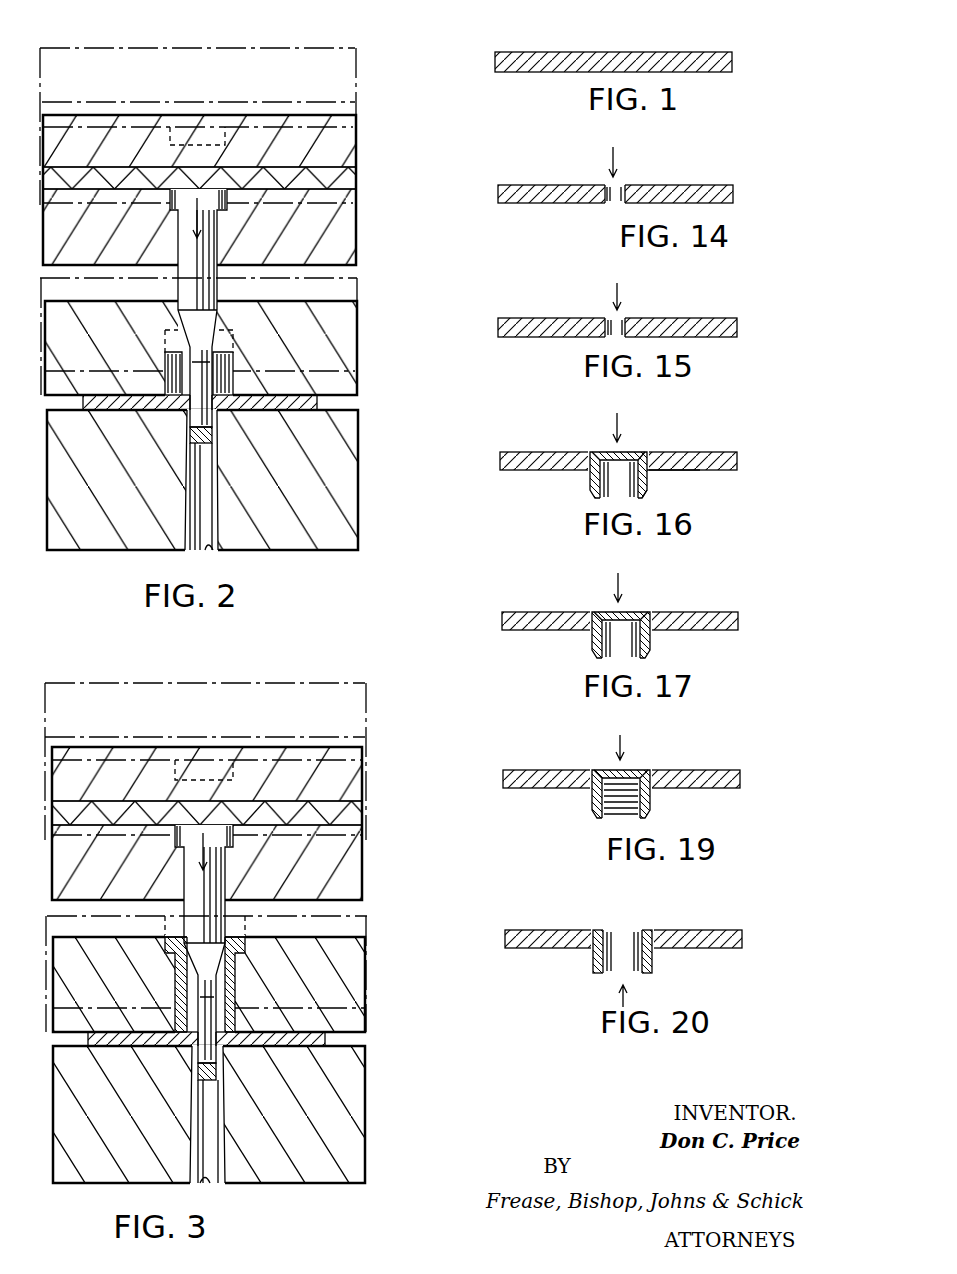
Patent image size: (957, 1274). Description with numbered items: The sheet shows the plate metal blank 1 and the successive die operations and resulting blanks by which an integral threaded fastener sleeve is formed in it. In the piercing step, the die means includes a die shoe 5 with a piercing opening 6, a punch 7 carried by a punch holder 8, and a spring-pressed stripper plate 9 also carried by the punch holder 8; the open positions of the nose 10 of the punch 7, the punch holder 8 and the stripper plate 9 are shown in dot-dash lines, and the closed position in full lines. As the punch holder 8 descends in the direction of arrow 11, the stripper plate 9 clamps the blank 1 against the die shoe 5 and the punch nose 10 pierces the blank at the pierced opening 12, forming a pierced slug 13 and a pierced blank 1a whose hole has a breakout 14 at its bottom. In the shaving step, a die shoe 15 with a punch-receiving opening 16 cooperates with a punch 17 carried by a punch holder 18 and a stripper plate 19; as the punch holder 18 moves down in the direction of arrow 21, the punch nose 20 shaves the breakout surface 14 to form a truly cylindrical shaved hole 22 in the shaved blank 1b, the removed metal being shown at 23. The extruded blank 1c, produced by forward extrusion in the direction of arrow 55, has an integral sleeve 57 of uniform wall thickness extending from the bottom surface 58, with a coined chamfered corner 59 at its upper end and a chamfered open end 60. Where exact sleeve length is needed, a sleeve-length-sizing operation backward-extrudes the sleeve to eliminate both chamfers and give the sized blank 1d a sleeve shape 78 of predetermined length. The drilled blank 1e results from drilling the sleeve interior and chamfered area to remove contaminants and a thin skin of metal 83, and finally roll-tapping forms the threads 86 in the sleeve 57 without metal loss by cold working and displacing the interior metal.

In FIG. 1, the plate metal blank 1 is at (693, 52).
In FIG. 2, the pierced blank 1a is at (310, 402).
In FIG. 14, the pierced blank 1a is at (718, 193).
In FIG. 3, the shaved blank 1b is at (323, 1038).
In FIG. 15, the shaved blank 1b is at (723, 328).
In FIG. 16, the extruded blank 1c is at (718, 462).
In FIG. 20, the sized blank 1d is at (742, 933).
In FIG. 17, the drilled blank 1e is at (725, 622).
In FIG. 2, the die shoe 5 is at (335, 473).
In FIG. 2, the piercing opening 6 is at (210, 547).
In FIG. 2, the punch 7 is at (213, 288).
In FIG. 2, the punch holder 8 is at (327, 217).
In FIG. 2, the stripper plate 9 is at (348, 382).
In FIG. 2, the nose 10 is at (195, 385).
In FIG. 2, the arrow 11 is at (200, 220).
In FIG. 14, the arrow 11 is at (610, 155).
In FIG. 2, the pierced opening 12 is at (213, 403).
In FIG. 14, the pierced opening 12 is at (627, 193).
In FIG. 2, the pierced slug 13 is at (197, 448).
In FIG. 2, the breakout 14 is at (187, 408).
In FIG. 14, the breakout 14 is at (608, 203).
In FIG. 3, the die shoe 15 is at (318, 1125).
In FIG. 3, the punch-receiving opening 16 is at (203, 1173).
In FIG. 3, the punch 17 is at (227, 907).
In FIG. 3, the punch holder 18 is at (323, 850).
In FIG. 3, the stripper plate 19 is at (328, 973).
In FIG. 3, the punch nose 20 is at (205, 1018).
In FIG. 3, the arrow 21 is at (200, 852).
In FIG. 15, the arrow 21 is at (613, 290).
In FIG. 3, the shaved hole 22 is at (218, 1037).
In FIG. 15, the shaved hole 22 is at (627, 327).
In FIG. 3, the shaved metal 23 is at (203, 1087).
In FIG. 16, the arrow 55 is at (615, 420).
In FIG. 16, the sleeve 57 is at (588, 487).
In FIG. 17, the sleeve 57 is at (590, 645).
In FIG. 19, the sleeve 57 is at (650, 798).
In FIG. 16, the bottom surface 58 is at (703, 470).
In FIG. 16, the chamfered corner 59 is at (643, 455).
In FIG. 16, the open end 60 is at (643, 497).
In FIG. 20, the sleeve shape of predetermined length 78 is at (653, 962).
In FIG. 17, the thin skin of metal 83 is at (633, 613).
In FIG. 19, the threads 86 is at (613, 808).